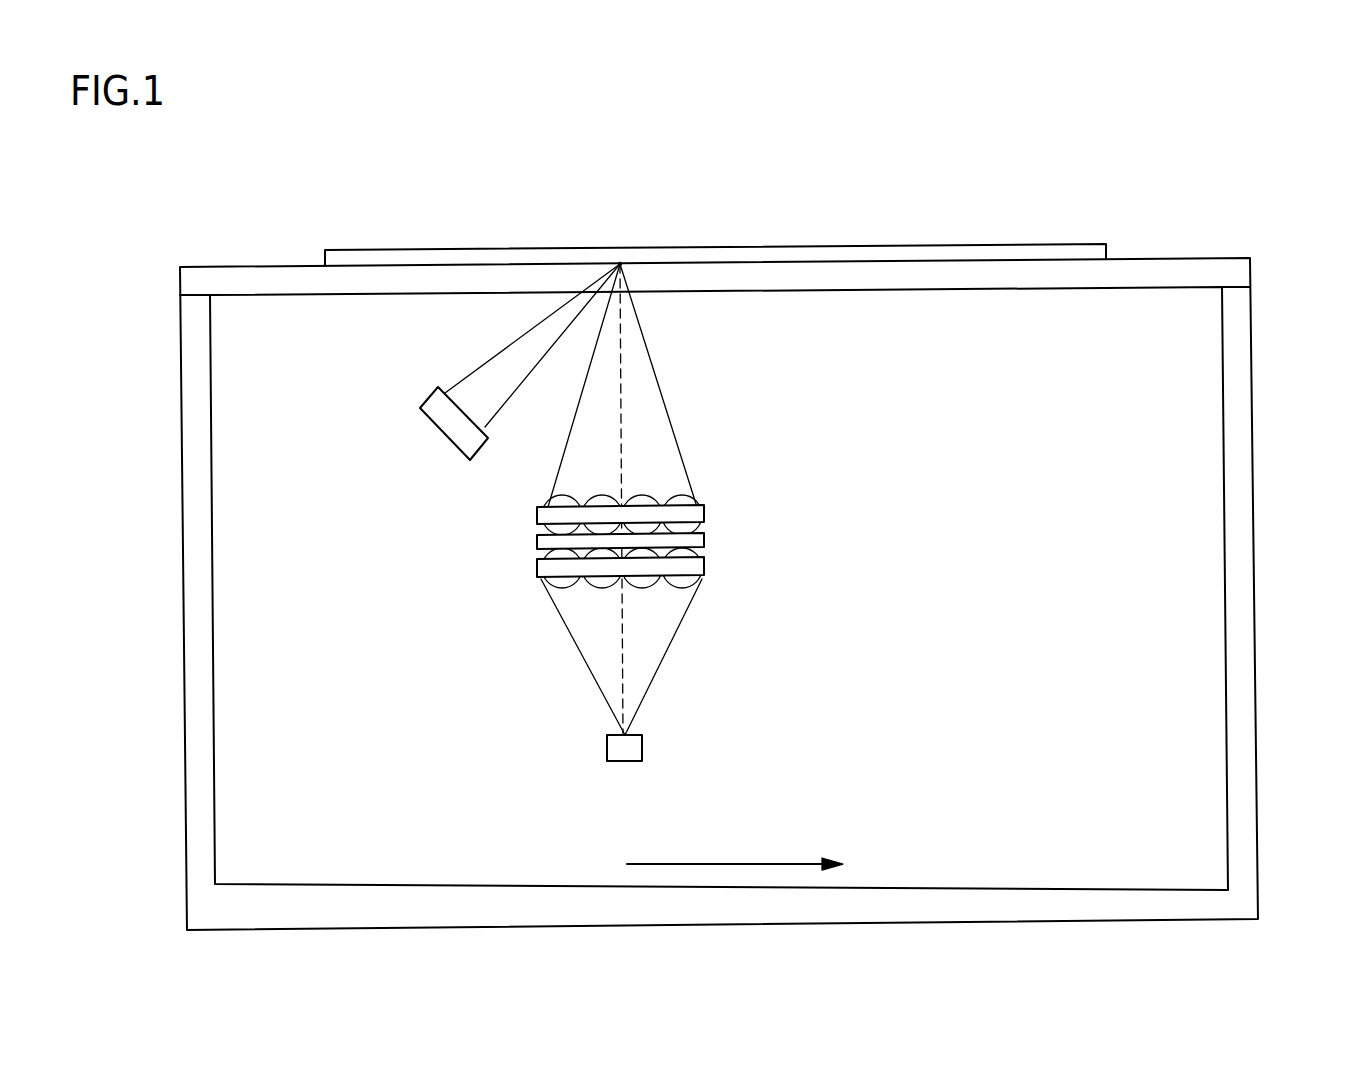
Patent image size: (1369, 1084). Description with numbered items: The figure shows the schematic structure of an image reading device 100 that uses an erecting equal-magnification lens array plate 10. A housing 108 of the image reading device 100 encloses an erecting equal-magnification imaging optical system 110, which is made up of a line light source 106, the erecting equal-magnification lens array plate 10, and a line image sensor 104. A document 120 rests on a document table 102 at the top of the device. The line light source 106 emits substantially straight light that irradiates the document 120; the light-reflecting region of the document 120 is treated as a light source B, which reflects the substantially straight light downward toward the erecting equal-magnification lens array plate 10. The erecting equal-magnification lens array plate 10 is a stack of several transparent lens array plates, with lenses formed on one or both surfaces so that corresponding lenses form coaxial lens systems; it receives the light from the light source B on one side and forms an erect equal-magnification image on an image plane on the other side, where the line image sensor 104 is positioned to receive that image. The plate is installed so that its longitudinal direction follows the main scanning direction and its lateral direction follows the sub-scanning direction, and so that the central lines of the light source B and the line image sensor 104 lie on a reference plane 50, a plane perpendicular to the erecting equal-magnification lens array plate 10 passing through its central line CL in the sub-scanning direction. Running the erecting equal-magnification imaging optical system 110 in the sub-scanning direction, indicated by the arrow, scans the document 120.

The image reading device 100 is at (1174, 182).
The document table 102 is at (1180, 257).
The housing 108 is at (1250, 588).
The document 120 is at (908, 253).
The line light source 106 is at (442, 435).
The light source B is at (626, 265).
The reference plane 50 is at (622, 413).
The central line CL is at (624, 513).
The erecting equal-magnification imaging optical system 110 is at (488, 590).
The erecting equal-magnification lens array plate 10 is at (744, 530).
The line image sensor 104 is at (642, 748).